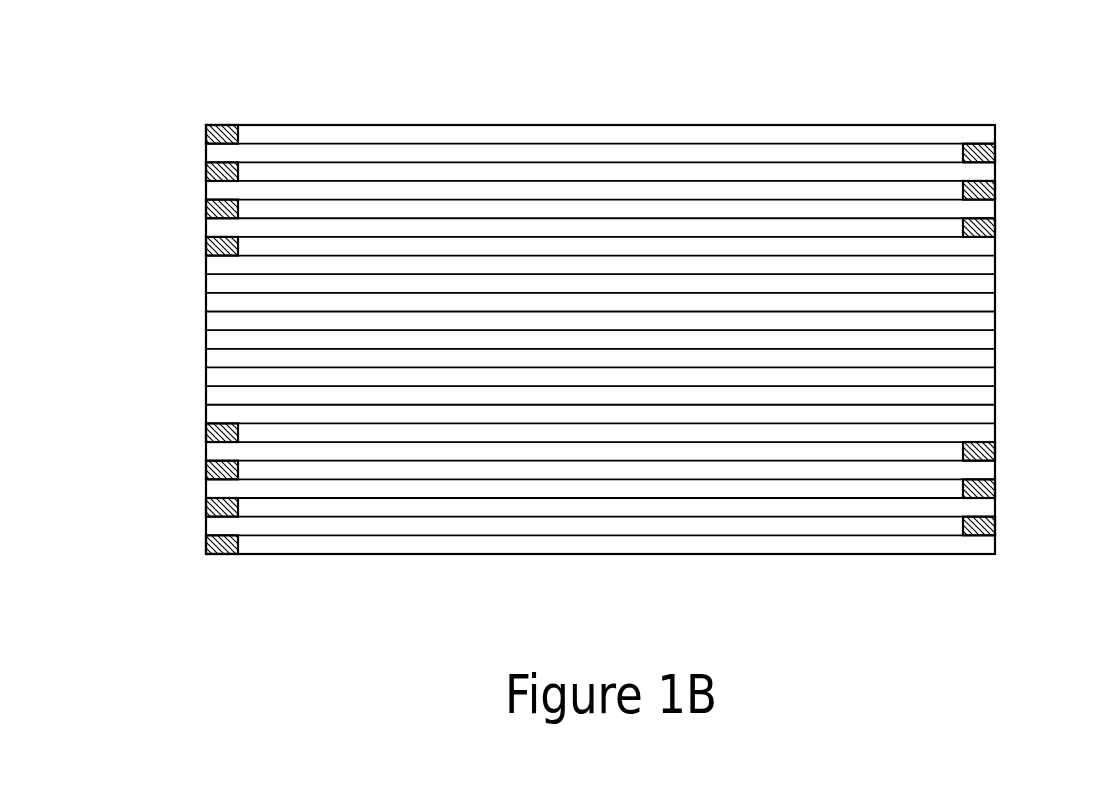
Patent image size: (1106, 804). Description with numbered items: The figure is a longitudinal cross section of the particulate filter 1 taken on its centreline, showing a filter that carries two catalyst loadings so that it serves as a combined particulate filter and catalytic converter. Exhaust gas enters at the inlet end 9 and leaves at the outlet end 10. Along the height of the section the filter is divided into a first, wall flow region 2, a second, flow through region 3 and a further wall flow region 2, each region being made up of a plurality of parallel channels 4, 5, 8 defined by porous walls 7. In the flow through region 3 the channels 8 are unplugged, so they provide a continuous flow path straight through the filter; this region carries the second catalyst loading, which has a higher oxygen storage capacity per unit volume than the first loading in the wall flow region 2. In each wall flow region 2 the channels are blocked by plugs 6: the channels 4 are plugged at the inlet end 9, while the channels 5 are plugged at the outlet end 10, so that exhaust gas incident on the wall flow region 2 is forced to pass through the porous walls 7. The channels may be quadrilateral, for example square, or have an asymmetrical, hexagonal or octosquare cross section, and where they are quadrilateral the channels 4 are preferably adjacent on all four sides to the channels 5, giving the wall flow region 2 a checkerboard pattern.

The particulate filter 1 is at (943, 73).
The wall flow region 2 is at (1005, 125).
The flow through region 3 is at (1005, 256).
The channels 4 is at (252, 135).
The channels 5 is at (295, 153).
The plugs 6 is at (215, 135).
The porous walls 7 is at (282, 182).
The channels 8 is at (235, 312).
The inlet end 9 is at (166, 496).
The outlet end 10 is at (1007, 104).